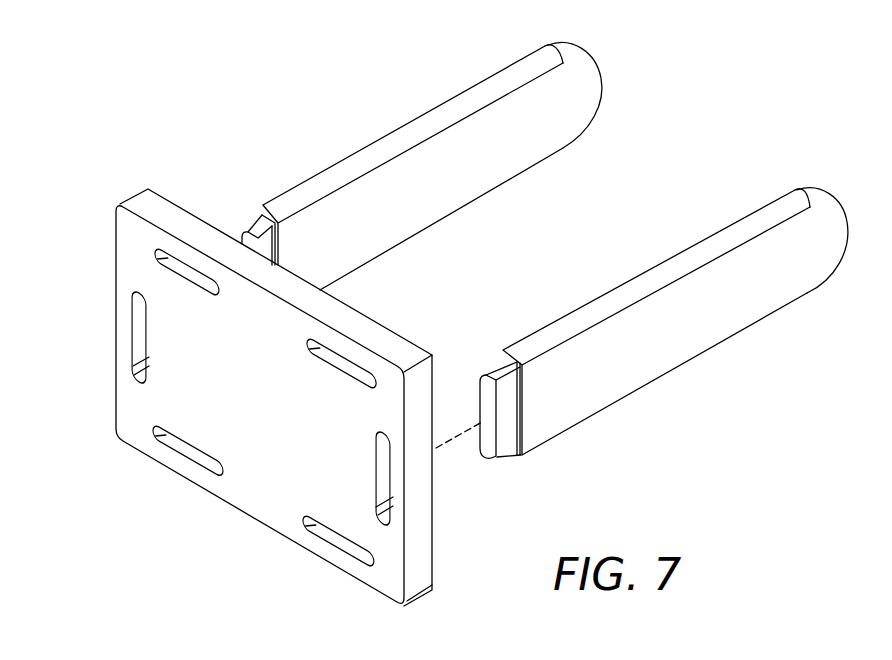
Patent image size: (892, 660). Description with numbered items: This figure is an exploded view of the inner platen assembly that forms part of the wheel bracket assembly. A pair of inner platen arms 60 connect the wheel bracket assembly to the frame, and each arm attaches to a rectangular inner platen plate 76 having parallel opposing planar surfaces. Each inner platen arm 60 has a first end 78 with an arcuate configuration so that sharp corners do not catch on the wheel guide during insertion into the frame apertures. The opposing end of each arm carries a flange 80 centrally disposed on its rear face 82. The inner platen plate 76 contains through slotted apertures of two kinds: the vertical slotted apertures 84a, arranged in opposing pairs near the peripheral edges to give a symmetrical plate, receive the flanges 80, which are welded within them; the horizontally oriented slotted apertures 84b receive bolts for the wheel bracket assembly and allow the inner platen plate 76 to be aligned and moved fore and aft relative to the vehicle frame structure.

The inner platen arm 60 is at (358, 148).
The inner platen plate 76 is at (441, 502).
The first end 78 is at (577, 47).
The flange 80 is at (241, 232).
The rear face 82 is at (246, 231).
The vertical slotted aperture 84a is at (140, 330).
The horizontal slotted aperture 84b is at (178, 266).